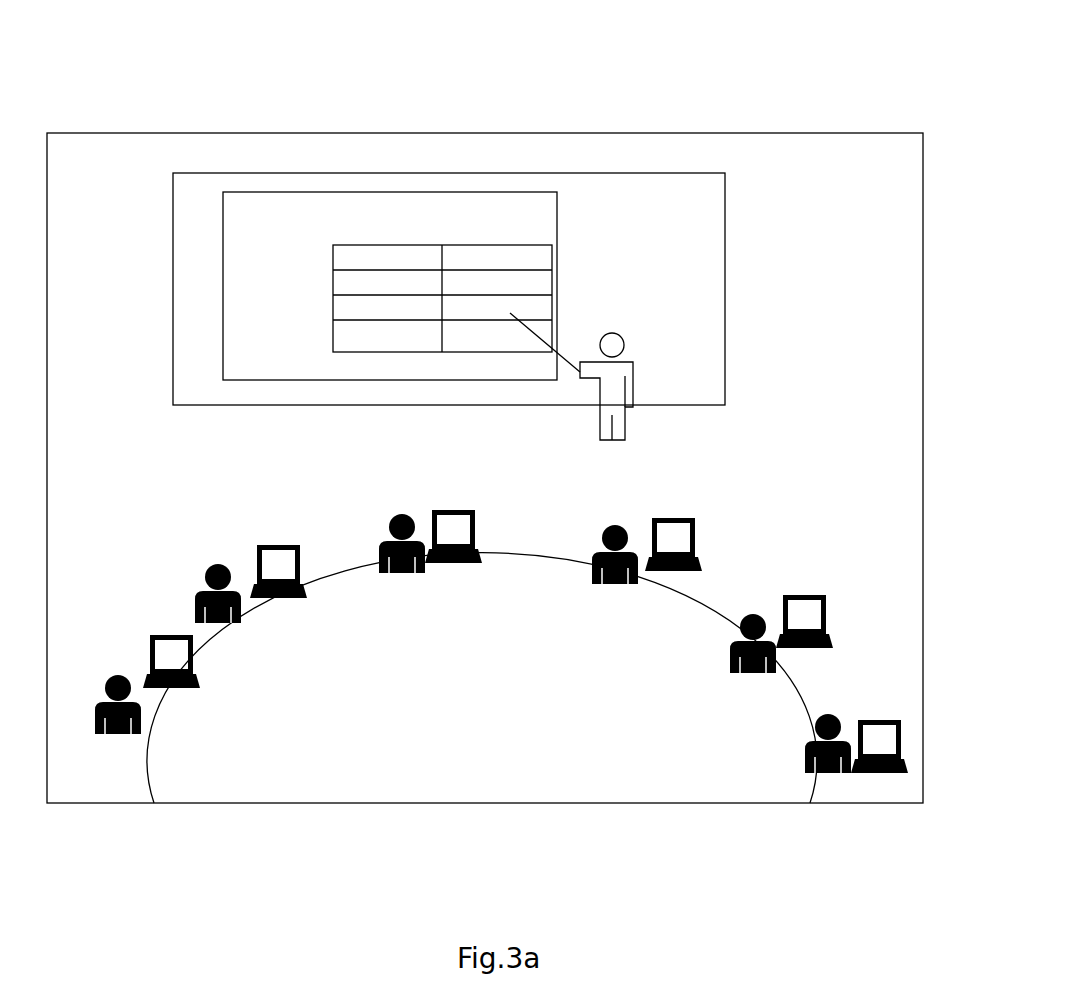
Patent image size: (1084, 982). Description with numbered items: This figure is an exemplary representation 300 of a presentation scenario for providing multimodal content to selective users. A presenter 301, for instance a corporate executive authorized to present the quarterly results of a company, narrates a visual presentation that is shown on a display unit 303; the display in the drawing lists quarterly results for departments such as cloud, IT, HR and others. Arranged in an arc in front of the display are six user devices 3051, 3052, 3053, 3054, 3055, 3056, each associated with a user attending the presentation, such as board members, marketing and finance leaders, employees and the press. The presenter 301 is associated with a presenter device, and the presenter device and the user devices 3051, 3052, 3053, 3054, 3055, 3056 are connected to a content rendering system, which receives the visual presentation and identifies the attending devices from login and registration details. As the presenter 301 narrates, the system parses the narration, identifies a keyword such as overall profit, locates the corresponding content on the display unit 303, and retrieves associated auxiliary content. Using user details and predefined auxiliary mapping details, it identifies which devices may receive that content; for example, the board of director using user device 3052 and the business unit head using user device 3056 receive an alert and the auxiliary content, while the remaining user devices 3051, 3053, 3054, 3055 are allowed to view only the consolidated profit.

The exemplary representation 300 is at (880, 78).
The presenter 301 is at (613, 310).
The display unit 303 is at (728, 172).
The user device 3051 is at (873, 712).
The user device 3052 is at (800, 590).
The user device 3053 is at (675, 512).
The user device 3054 is at (477, 503).
The user device 3055 is at (275, 537).
The user device 3056 is at (145, 628).